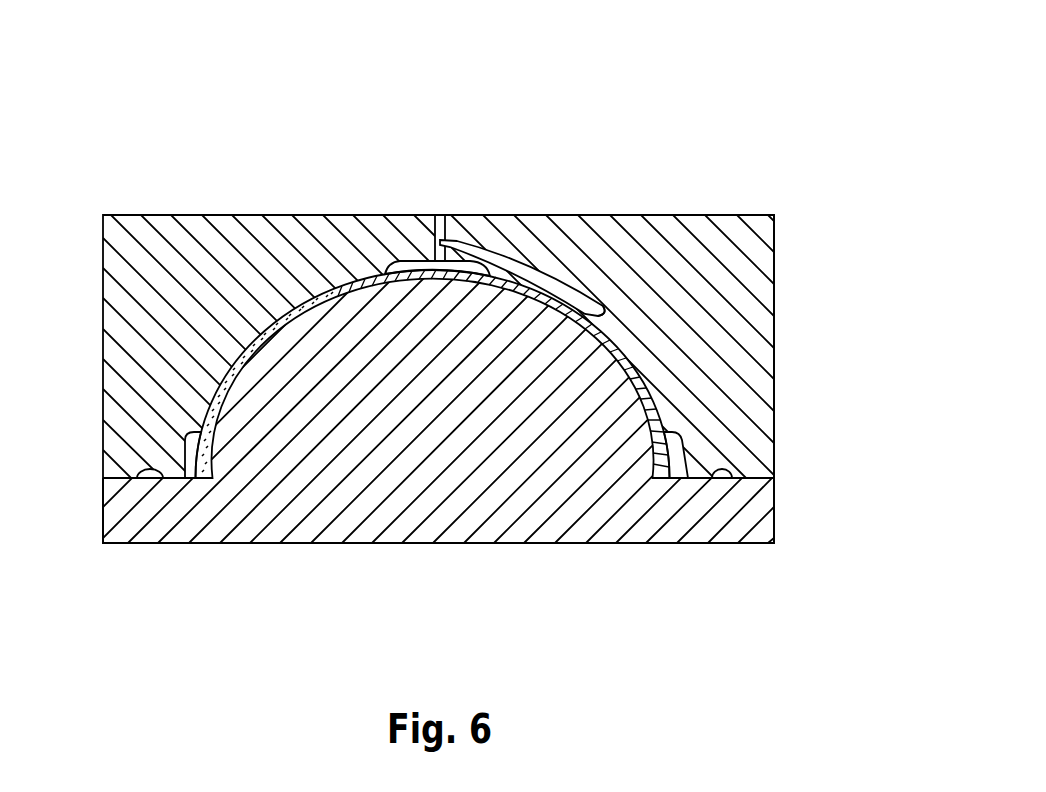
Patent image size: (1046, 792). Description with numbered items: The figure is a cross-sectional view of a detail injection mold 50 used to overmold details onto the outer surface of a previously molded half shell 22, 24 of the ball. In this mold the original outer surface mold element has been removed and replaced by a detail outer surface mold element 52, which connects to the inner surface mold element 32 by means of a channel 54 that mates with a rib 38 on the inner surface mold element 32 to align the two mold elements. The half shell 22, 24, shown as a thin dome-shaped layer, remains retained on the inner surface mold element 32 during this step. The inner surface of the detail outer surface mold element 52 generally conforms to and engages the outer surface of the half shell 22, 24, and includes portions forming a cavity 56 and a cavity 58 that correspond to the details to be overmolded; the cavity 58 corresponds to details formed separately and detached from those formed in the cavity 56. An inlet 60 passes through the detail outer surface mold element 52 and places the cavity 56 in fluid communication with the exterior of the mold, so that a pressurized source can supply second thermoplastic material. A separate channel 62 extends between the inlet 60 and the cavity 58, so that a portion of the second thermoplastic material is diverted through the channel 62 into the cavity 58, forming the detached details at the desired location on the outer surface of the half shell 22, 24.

The detail injection mold 50 is at (664, 96).
The detail outer surface mold element 52 is at (688, 215).
The inner surface mold element 32 is at (545, 545).
The half shell 22 is at (432, 309).
The half shell 24 is at (322, 293).
The channel 54 is at (720, 470).
The cavity 56 is at (407, 260).
The cavity 58 is at (610, 323).
The inlet 60 is at (430, 215).
The channel 62 is at (547, 263).
The rib 38 is at (717, 478).